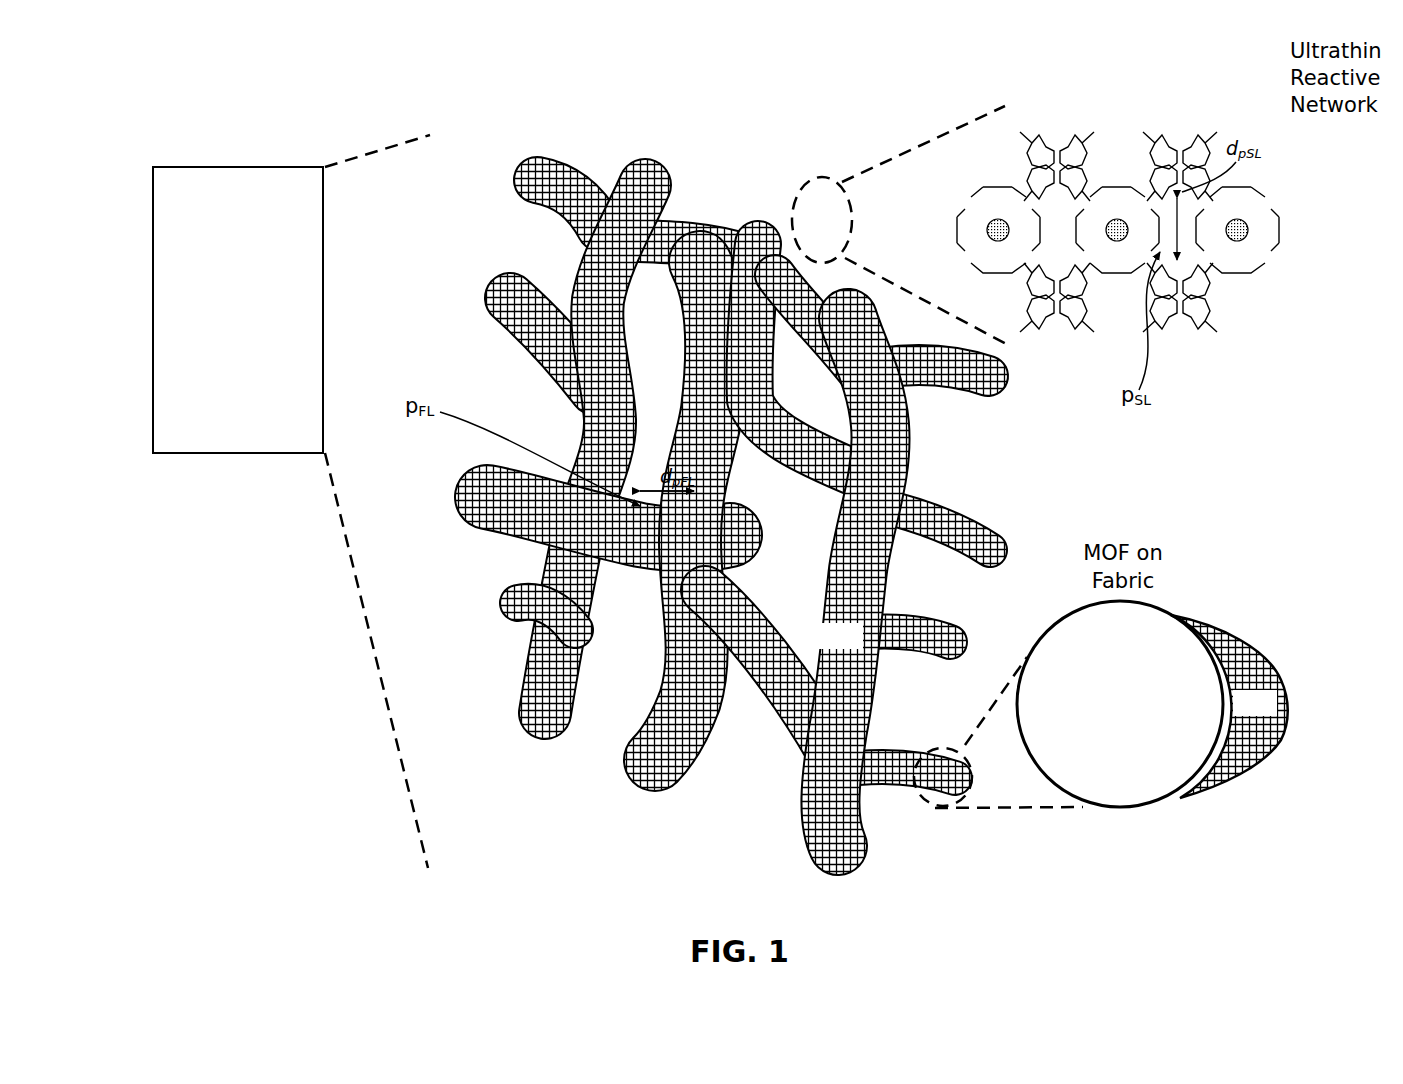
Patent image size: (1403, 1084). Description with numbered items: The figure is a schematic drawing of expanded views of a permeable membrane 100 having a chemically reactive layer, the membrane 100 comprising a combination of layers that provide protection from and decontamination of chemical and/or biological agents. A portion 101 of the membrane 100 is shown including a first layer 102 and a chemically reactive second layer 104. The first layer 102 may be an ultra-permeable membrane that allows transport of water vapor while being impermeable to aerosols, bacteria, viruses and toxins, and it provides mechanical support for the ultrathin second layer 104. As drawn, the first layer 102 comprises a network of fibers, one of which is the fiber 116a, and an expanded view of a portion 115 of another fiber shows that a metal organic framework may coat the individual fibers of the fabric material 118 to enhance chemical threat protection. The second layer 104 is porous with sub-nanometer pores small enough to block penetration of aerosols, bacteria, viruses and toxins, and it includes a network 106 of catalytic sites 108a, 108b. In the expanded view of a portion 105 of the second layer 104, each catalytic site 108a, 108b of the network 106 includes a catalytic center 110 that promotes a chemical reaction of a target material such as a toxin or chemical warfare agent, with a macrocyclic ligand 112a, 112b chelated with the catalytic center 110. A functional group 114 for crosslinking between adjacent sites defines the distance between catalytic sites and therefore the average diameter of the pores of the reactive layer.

The membrane 100 is at (226, 114).
The portion of a membrane 101 is at (238, 310).
The first layer 102 is at (751, 513).
The chemically reactive second layer 104 is at (810, 100).
The portion of the second layer 105 is at (822, 220).
The network 106 is at (1165, 226).
The catalytic site 108a is at (1272, 182).
The catalytic site 108b is at (1118, 174).
The catalytic center 110 is at (1249, 229).
The macrocyclic ligand 112a is at (1243, 284).
The macrocyclic ligand 112b is at (1107, 280).
The functional group for crosslinking 114 is at (1216, 294).
The portion of fiber 115 is at (965, 757).
The fiber 116a is at (850, 566).
The fabric material 118 is at (1120, 704).